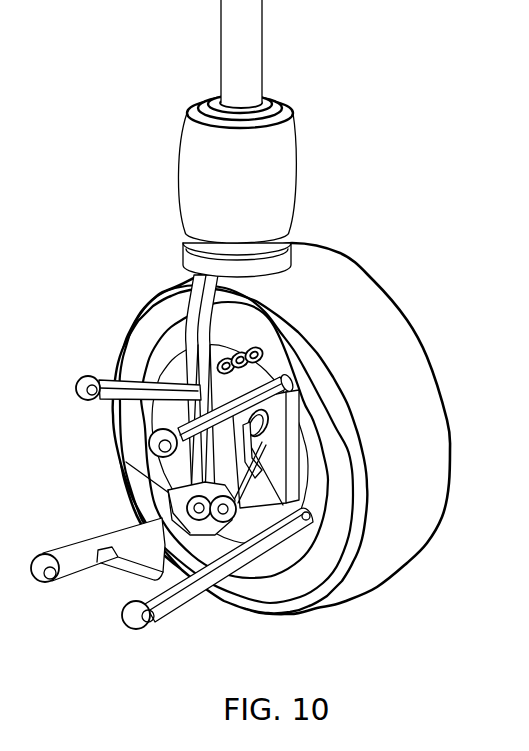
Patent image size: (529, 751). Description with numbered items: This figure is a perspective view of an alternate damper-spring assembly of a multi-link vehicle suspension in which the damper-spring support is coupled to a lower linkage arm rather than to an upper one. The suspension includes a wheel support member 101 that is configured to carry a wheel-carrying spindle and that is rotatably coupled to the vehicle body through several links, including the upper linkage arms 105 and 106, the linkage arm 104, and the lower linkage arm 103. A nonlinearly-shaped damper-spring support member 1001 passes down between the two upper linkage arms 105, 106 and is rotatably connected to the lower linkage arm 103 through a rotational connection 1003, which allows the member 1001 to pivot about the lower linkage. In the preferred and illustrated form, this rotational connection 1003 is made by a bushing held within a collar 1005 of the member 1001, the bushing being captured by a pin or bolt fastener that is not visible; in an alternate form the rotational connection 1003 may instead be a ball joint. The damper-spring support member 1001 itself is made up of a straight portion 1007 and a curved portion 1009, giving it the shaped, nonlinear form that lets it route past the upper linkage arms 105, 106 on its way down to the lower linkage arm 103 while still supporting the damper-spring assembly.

The damper-spring support member 1001 is at (152, 328).
The curved portion 1009 is at (228, 330).
The upper linkage arm 105 is at (290, 396).
The linkage arm 104 is at (250, 486).
The wheel support member 101 is at (273, 468).
The lower linkage arm 103 is at (306, 516).
The rotational connection 1003 is at (204, 535).
The upper linkage arm 106 is at (137, 400).
The straight portion 1007 is at (178, 478).
The collar 1005 is at (186, 492).